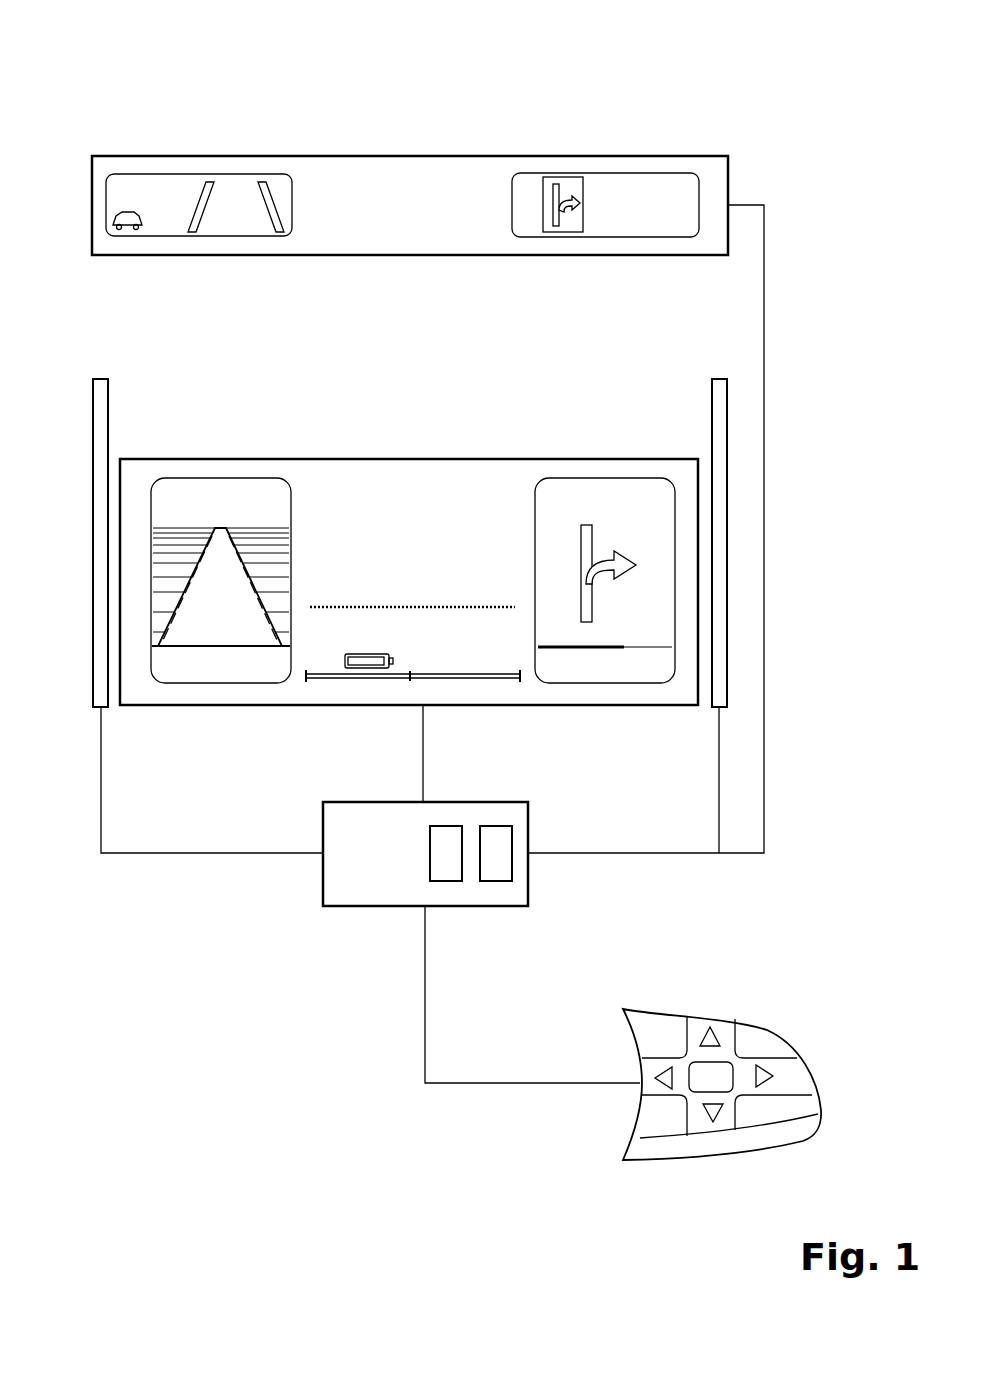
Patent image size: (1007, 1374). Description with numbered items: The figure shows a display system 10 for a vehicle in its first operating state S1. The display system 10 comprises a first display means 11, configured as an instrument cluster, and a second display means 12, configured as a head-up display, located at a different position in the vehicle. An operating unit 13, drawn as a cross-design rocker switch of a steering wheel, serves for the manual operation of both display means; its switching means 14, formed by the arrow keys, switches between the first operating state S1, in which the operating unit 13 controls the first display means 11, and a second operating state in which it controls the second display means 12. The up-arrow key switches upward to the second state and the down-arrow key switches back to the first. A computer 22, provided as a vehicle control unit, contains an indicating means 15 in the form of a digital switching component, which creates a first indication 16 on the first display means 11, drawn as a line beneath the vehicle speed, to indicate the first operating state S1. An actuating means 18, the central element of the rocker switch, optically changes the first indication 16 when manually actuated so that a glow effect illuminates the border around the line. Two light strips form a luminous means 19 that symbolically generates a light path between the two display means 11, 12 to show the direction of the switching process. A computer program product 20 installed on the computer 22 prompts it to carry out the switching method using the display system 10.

The display system 10 is at (106, 84).
The first display means 11 is at (247, 459).
The second display means 12 is at (693, 156).
The operating unit 13 is at (812, 1022).
The switching means 14 is at (714, 1142).
The indicating means 15 is at (495, 881).
The first indication 16 is at (482, 607).
The actuating means 18 is at (703, 1078).
The luminous means 19 is at (92, 416).
The computer program product 20 is at (445, 881).
The computer 22 is at (365, 906).
The first operating state S1 is at (778, 546).